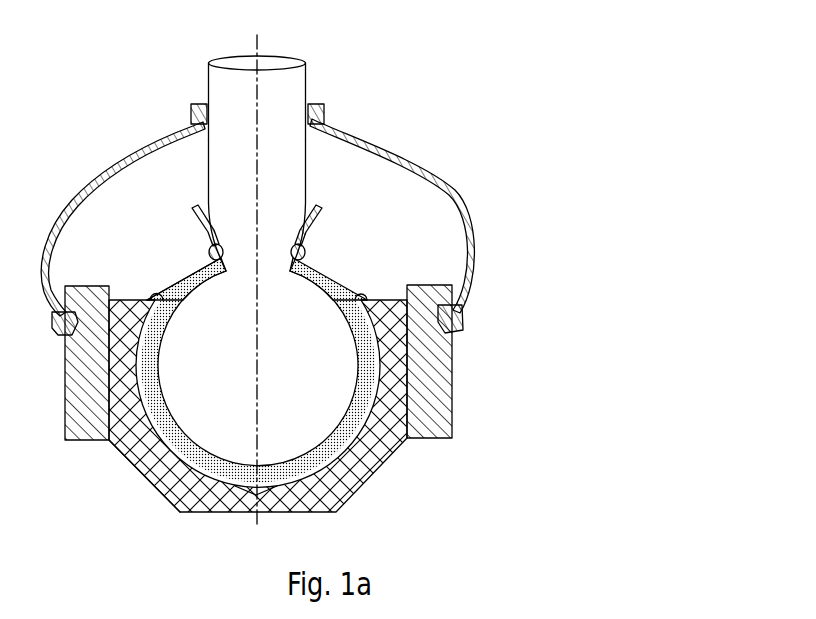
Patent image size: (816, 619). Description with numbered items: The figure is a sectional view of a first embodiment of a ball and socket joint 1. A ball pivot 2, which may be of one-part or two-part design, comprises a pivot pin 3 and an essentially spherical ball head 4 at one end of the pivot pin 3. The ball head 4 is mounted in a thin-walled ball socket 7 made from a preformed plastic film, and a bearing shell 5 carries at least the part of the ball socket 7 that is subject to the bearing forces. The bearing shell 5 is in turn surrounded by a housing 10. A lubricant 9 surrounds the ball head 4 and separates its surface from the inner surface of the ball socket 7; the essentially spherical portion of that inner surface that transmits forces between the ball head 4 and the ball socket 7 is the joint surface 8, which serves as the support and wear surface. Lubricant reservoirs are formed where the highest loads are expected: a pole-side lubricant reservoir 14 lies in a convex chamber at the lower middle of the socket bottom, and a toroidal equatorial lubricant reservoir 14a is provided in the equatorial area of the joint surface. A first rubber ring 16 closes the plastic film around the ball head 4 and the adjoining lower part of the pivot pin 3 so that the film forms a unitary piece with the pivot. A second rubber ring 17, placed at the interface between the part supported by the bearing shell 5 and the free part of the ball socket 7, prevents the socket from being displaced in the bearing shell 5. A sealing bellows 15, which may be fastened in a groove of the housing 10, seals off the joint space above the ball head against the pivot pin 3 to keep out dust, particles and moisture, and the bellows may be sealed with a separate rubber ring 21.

The ball and socket joint 1 is at (403, 52).
The ball pivot 2 is at (212, 80).
The pivot pin 3 is at (302, 165).
The ball head 4 is at (320, 300).
The bearing shell 5 is at (360, 470).
The thin-walled ball socket 7 is at (175, 458).
The joint surface 8 is at (214, 462).
The lubricant 9 is at (178, 282).
The housing 10 is at (447, 382).
The lubricant reservoir 14 is at (252, 497).
The equatorial lubricant reservoir 14a is at (147, 373).
The sealing bellows 15 is at (460, 192).
The first rubber ring 16 is at (306, 252).
The second rubber ring 17 is at (363, 294).
The rubber ring 21 is at (325, 118).